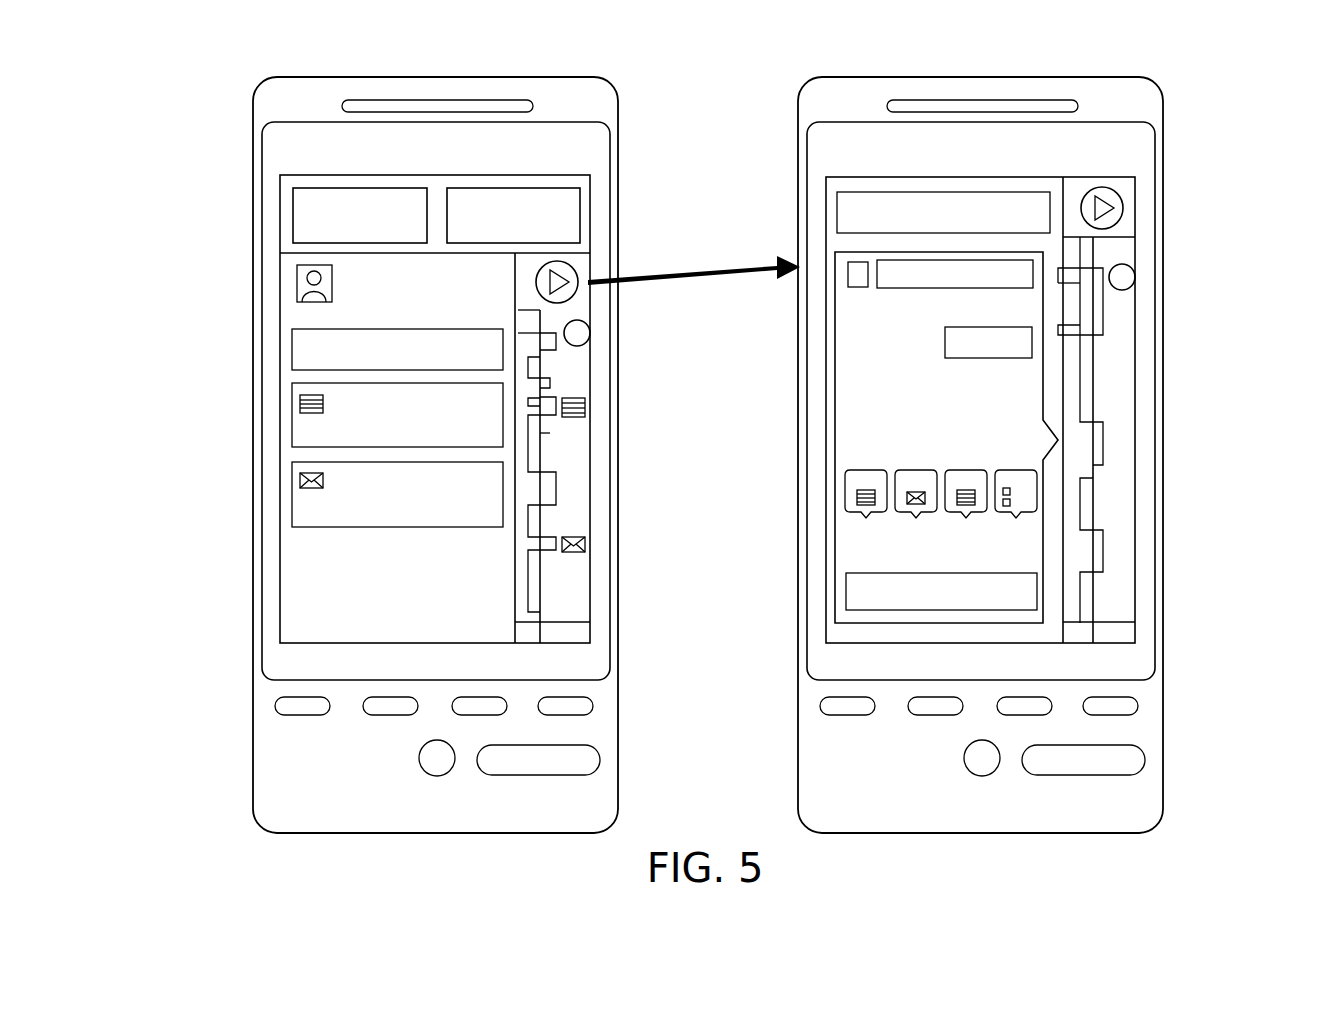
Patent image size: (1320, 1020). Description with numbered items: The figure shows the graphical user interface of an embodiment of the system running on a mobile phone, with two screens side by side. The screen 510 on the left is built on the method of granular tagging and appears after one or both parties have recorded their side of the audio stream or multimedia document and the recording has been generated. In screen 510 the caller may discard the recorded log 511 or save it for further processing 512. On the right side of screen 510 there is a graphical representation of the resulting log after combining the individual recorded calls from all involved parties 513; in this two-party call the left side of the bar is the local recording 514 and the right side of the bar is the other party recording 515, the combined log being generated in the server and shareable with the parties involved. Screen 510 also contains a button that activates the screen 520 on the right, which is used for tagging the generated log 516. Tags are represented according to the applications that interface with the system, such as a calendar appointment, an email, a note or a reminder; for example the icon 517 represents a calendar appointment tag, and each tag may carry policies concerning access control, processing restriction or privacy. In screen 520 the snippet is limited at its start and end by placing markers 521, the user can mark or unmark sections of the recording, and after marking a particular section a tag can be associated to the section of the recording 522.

The screen 510 is at (253, 112).
The discard recorded log control 511 is at (348, 167).
The save for further processing control 512 is at (513, 165).
The graphical representation of the resulting log 513 is at (573, 303).
The local recording 514 is at (533, 585).
The other party recording 515 is at (563, 492).
The tagging button 516 is at (585, 277).
The calendar appointment tag icon 517 is at (598, 403).
The screen 520 is at (812, 107).
The markers 521 is at (1083, 258).
The section of the recording 522 is at (1032, 352).